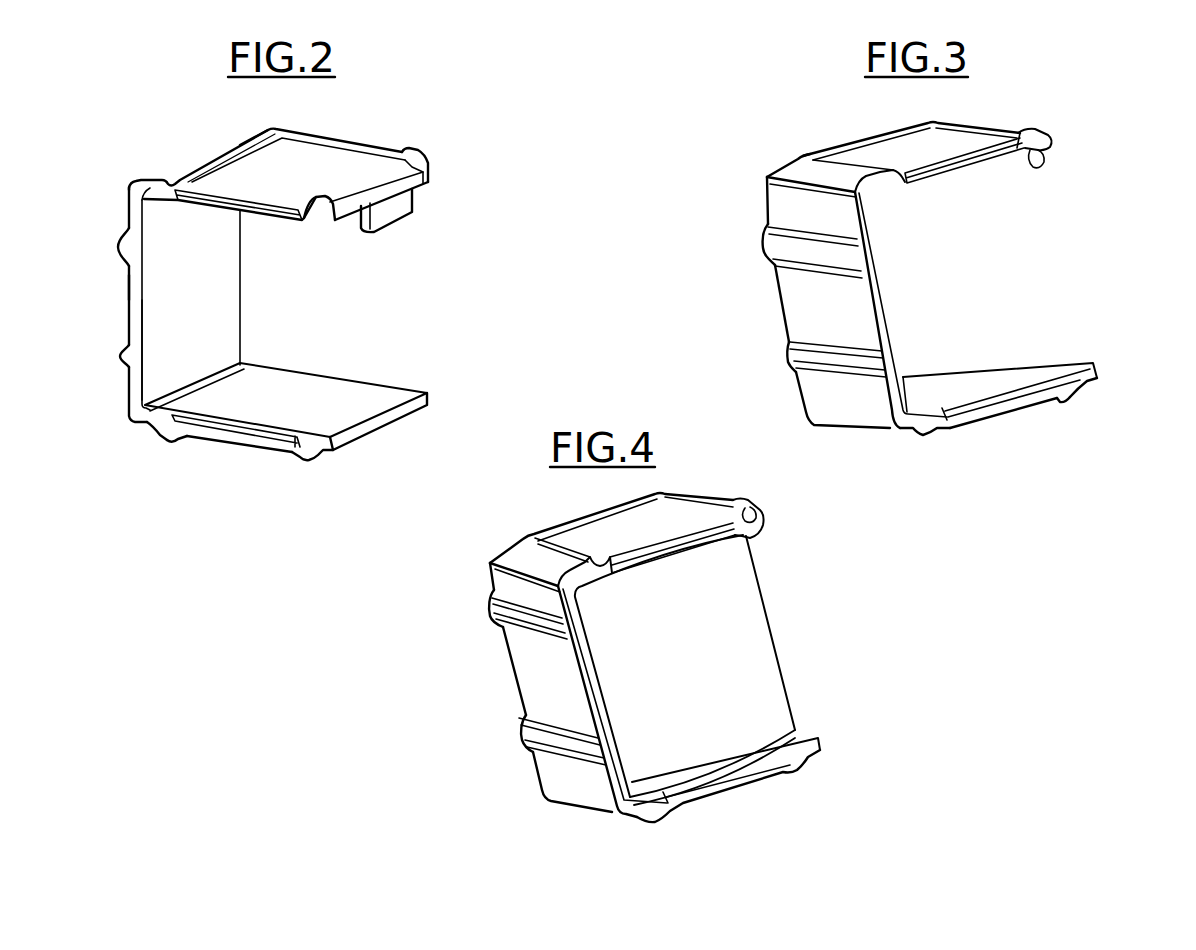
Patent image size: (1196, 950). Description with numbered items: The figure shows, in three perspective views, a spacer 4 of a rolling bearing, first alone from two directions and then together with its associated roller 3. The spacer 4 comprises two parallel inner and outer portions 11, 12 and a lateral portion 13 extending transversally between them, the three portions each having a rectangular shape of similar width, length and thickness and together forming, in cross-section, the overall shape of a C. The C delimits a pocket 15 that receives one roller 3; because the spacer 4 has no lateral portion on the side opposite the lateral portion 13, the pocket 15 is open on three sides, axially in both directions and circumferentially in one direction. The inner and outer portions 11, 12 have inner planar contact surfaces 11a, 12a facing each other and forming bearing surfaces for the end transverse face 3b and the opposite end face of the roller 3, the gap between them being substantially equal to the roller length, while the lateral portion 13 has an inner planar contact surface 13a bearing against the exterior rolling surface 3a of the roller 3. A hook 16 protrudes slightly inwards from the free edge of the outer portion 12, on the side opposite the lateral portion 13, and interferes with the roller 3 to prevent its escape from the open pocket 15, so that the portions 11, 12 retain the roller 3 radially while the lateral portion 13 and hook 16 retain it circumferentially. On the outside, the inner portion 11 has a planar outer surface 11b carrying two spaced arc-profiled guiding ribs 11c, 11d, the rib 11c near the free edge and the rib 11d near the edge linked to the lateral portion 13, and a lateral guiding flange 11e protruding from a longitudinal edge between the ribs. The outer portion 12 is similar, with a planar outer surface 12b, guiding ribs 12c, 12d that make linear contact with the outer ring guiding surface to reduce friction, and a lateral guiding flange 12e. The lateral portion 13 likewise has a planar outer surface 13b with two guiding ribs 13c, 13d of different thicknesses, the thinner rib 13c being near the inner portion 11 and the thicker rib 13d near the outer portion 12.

In FIG. 4, the roller 3 is at (688, 677).
In FIG. 4, the exterior rolling surface 3a is at (777, 666).
In FIG. 4, the end transverse face 3b is at (650, 792).
In FIG. 2, the spacer 4 is at (452, 165).
In FIG. 3, the spacer 4 is at (1075, 138).
In FIG. 4, the spacer 4 is at (784, 530).
In FIG. 2, the inner portion 11 is at (267, 460).
In FIG. 3, the inner portion 11 is at (1018, 421).
In FIG. 4, the inner portion 11 is at (772, 786).
In FIG. 2, the inner planar contact surface 11a is at (377, 394).
In FIG. 3, the inner planar contact surface 11a is at (1000, 375).
In FIG. 4, the inner planar contact surface 11a is at (800, 738).
In FIG. 2, the planar outer surface 11b is at (228, 448).
In FIG. 3, the planar outer surface 11b is at (988, 420).
In FIG. 2, the guiding rib 11c is at (303, 462).
In FIG. 3, the guiding rib 11c is at (1059, 405).
In FIG. 2, the guiding rib 11d is at (174, 445).
In FIG. 3, the guiding rib 11d is at (928, 438).
In FIG. 2, the lateral guiding flange 11e is at (148, 421).
In FIG. 3, the lateral guiding flange 11e is at (1057, 383).
In FIG. 2, the outer portion 12 is at (295, 143).
In FIG. 3, the outer portion 12 is at (885, 142).
In FIG. 4, the outer portion 12 is at (606, 521).
In FIG. 2, the inner planar contact surface 12a is at (147, 212).
In FIG. 3, the inner planar contact surface 12a is at (875, 210).
In FIG. 2, the planar outer surface 12b is at (335, 155).
In FIG. 3, the planar outer surface 12b is at (920, 140).
In FIG. 2, the guiding rib 12c is at (390, 152).
In FIG. 3, the guiding rib 12c is at (983, 128).
In FIG. 2, the guiding rib 12d is at (253, 140).
In FIG. 3, the guiding rib 12d is at (815, 155).
In FIG. 2, the lateral guiding flange 12e is at (190, 214).
In FIG. 3, the lateral guiding flange 12e is at (1023, 140).
In FIG. 2, the lateral portion 13 is at (122, 320).
In FIG. 3, the lateral portion 13 is at (798, 320).
In FIG. 4, the lateral portion 13 is at (522, 700).
In FIG. 2, the inner planar contact surface 13a is at (165, 364).
In FIG. 3, the inner planar contact surface 13a is at (905, 370).
In FIG. 4, the inner planar contact surface 13a is at (620, 764).
In FIG. 2, the planar outer surface 13b is at (128, 285).
In FIG. 3, the planar outer surface 13b is at (786, 285).
In FIG. 2, the guiding rib 13c is at (122, 353).
In FIG. 3, the guiding rib 13c is at (790, 358).
In FIG. 4, the guiding rib 13c is at (562, 740).
In FIG. 2, the guiding rib 13d is at (118, 248).
In FIG. 3, the guiding rib 13d is at (768, 251).
In FIG. 4, the guiding rib 13d is at (528, 614).
In FIG. 2, the pocket 15 is at (340, 313).
In FIG. 3, the pocket 15 is at (980, 285).
In FIG. 2, the hook 16 is at (398, 210).
In FIG. 3, the hook 16 is at (1033, 170).